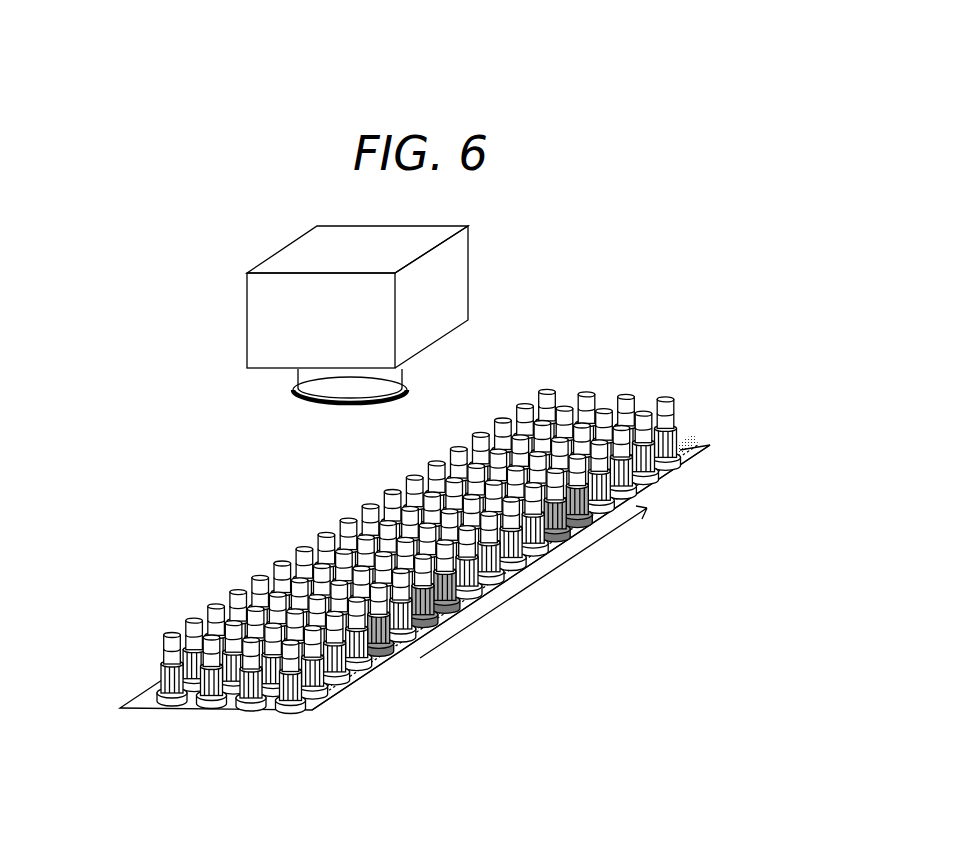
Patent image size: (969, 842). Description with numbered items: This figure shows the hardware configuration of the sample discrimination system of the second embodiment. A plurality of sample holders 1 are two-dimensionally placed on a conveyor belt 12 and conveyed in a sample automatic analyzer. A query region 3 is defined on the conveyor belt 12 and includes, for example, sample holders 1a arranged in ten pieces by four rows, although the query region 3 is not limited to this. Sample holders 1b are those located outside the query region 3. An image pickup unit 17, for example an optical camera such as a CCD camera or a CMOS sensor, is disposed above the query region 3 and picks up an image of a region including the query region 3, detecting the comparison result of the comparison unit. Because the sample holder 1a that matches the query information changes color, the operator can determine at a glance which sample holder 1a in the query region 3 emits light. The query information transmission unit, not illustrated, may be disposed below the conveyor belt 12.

The image pickup unit 17 is at (247, 327).
The conveyor belt 12 is at (146, 691).
The sample holder 1 is at (530, 668).
The sample holder located in the query region 1a is at (463, 608).
The sample holder located outside the query region 1b is at (375, 665).
The query region 3 is at (560, 568).